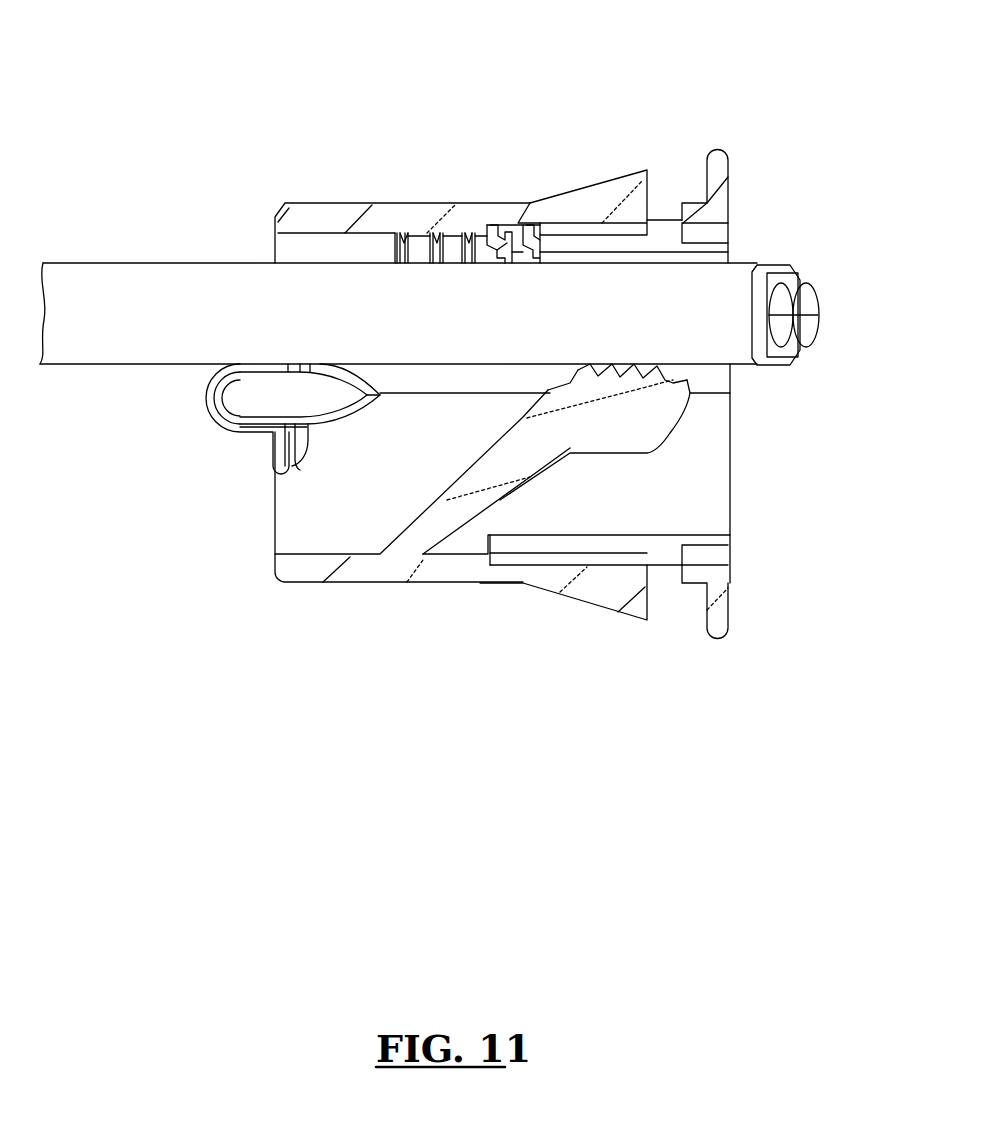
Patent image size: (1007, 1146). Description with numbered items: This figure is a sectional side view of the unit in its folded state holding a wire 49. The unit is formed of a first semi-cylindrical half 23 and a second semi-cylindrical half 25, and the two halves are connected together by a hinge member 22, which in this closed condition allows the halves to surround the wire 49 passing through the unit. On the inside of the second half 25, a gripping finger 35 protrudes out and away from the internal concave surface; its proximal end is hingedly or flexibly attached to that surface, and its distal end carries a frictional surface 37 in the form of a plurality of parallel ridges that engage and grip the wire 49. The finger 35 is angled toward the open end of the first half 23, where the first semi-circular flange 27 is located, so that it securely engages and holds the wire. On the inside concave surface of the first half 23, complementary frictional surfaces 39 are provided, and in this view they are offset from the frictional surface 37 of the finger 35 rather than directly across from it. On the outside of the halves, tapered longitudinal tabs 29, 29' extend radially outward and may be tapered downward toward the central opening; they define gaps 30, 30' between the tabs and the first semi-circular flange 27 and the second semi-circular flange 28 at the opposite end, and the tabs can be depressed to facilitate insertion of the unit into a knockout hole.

The wire 49 is at (210, 302).
The second semi-cylindrical half 25 is at (405, 220).
The complementary frictional surfaces 39 is at (455, 258).
The frictional surface 37 is at (610, 378).
The gripping finger 35 is at (648, 425).
The hinge member 22 is at (210, 403).
The first semi-cylindrical half 23 is at (470, 572).
The tapered longitudinal tab 29 is at (563, 637).
The tapered longitudinal tab 29' is at (588, 150).
The gap 30 is at (687, 654).
The gap 30' is at (682, 114).
The second semi-circular flange 28 is at (720, 168).
The first semi-circular flange 27 is at (728, 617).